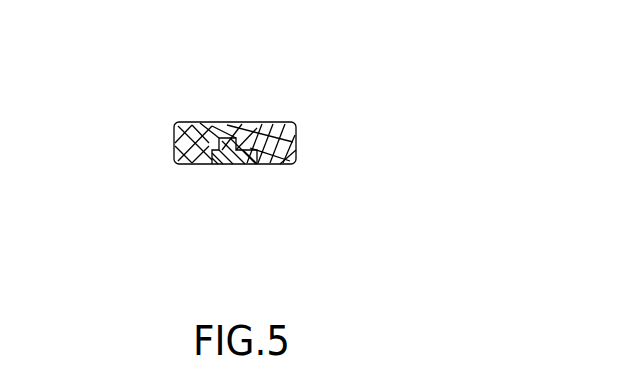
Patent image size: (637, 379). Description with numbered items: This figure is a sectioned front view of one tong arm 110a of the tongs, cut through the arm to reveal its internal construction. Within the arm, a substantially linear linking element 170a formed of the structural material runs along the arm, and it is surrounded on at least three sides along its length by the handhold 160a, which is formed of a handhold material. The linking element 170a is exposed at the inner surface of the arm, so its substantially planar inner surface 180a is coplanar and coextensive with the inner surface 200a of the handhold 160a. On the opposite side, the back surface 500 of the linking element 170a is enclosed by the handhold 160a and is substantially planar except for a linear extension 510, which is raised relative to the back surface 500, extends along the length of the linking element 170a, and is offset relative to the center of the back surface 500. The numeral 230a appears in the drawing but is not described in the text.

The tong arm 110a is at (322, 136).
The inner surface of the handhold 200a is at (193, 165).
The upper wiring / bonding pad region 230a is at (220, 123).
The linear extension 510 is at (242, 123).
The back surface 500 is at (270, 122).
The linking element 170a is at (233, 165).
The inner surface of the linking element 180a is at (218, 165).
The handhold 160a is at (293, 165).